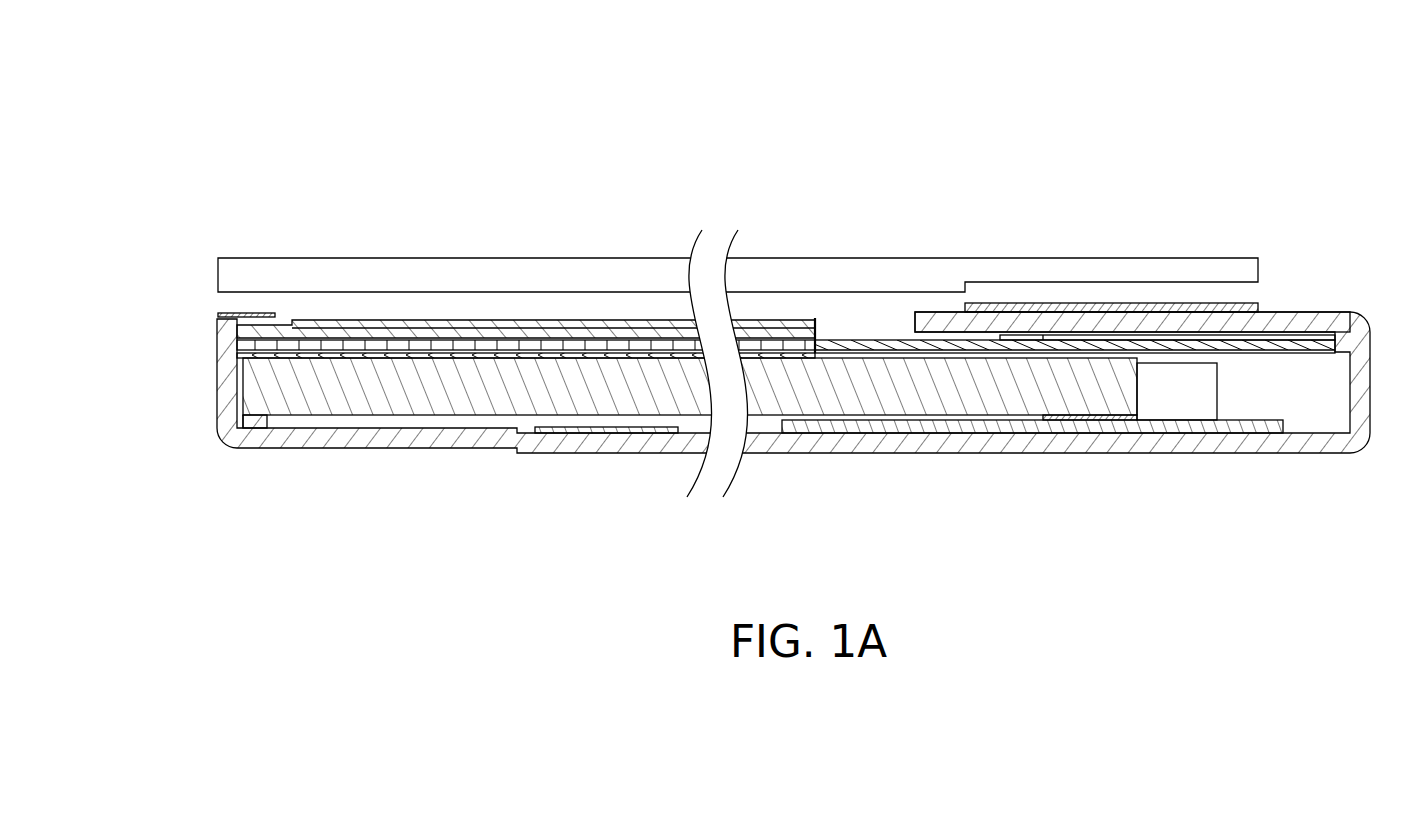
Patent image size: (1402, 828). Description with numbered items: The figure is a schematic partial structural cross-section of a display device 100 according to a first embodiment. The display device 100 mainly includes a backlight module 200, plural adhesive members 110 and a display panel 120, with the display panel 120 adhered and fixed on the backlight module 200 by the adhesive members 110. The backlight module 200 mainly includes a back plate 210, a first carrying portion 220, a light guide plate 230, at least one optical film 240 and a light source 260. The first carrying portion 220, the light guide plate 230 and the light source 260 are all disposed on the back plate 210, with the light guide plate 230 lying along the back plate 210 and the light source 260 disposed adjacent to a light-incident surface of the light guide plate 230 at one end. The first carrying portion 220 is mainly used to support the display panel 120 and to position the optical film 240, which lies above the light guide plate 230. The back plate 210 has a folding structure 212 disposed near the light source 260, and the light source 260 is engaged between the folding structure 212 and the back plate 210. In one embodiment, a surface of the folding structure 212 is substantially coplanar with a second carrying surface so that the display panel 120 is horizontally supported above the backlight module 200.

The display device 100 is at (149, 112).
The adhesive members 110 is at (218, 316).
The display panel 120 is at (531, 270).
The backlight module 200 is at (200, 308).
The back plate 210 is at (1125, 432).
The folding structure 212 is at (1313, 322).
The first carrying portion 220 is at (253, 332).
The light guide plate 230 is at (395, 398).
The optical film 240 is at (353, 330).
The light source 260 is at (1180, 407).